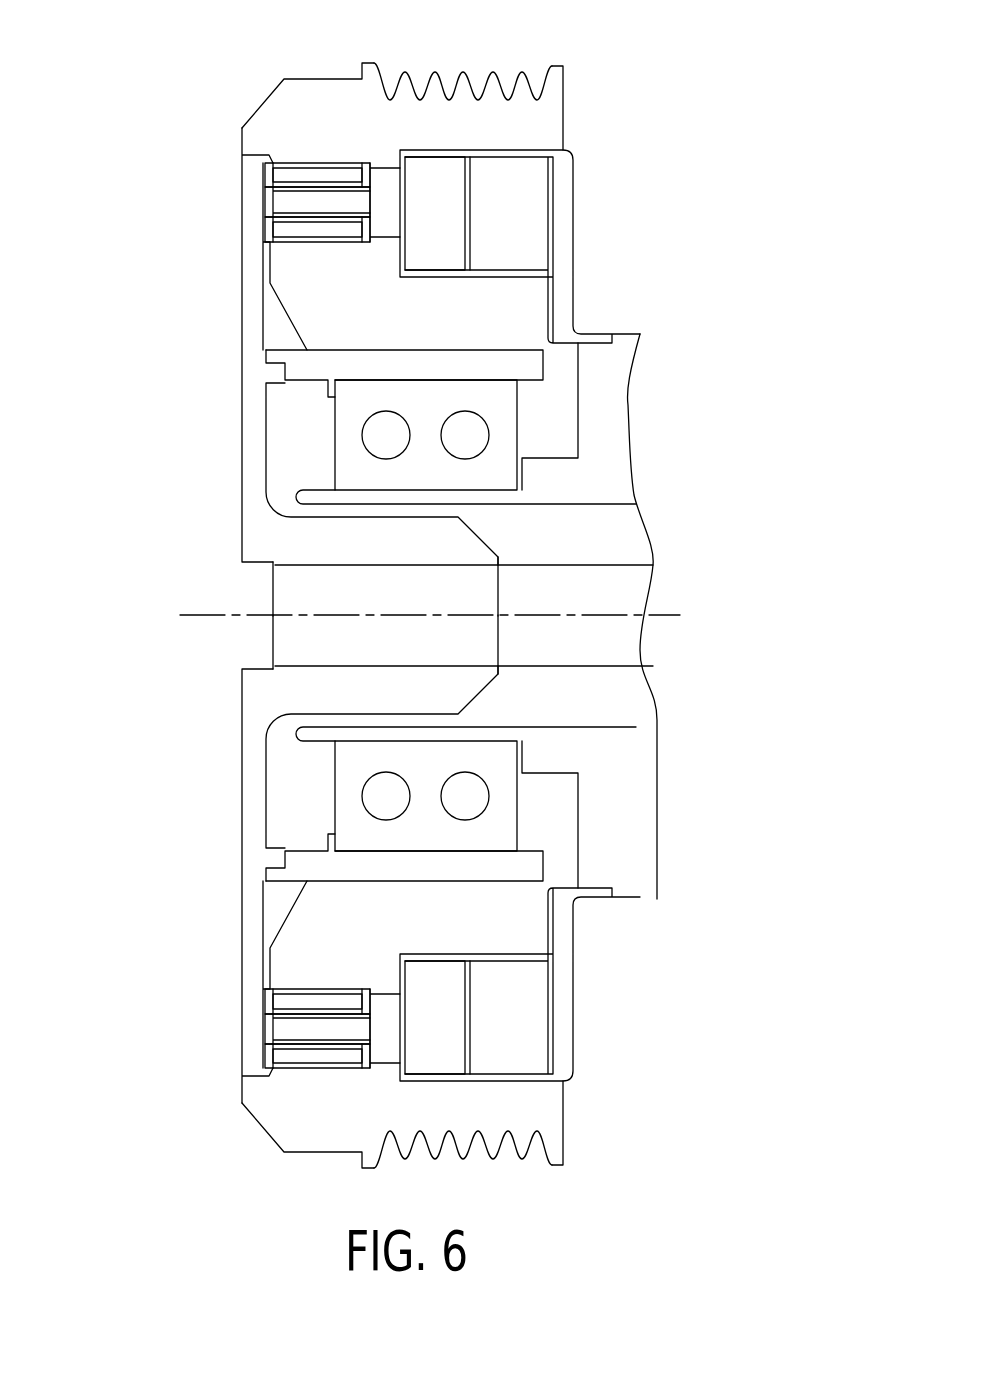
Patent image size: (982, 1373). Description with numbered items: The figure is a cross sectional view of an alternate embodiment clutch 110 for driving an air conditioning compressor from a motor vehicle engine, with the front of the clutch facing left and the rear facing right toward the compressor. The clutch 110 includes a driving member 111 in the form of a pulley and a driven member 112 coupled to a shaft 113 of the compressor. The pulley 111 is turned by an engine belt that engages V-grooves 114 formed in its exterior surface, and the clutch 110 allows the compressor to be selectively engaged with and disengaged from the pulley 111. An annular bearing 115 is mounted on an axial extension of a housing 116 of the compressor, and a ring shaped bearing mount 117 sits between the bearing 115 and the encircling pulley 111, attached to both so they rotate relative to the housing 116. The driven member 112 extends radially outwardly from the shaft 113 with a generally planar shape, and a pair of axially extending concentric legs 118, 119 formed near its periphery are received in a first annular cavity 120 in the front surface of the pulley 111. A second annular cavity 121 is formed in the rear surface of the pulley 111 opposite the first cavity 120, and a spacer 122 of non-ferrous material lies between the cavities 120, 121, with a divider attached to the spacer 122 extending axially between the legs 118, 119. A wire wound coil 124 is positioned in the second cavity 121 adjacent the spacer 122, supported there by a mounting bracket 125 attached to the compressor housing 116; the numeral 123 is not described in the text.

The clutch 110 is at (158, 454).
The driving member 111 is at (257, 96).
The driven member 112 is at (231, 285).
The shaft 113 is at (428, 600).
The V-grooves 114 is at (478, 100).
The annular bearing 115 is at (478, 433).
The housing 116 is at (562, 487).
The bearing mount 117 is at (535, 368).
The leg 118 is at (293, 175).
The leg 119 is at (292, 228).
The first annular cavity 120 is at (252, 576).
The second annular cavity 121 is at (529, 577).
The spacer 122 is at (382, 187).
The spacer 123 is at (285, 203).
The wire wound coil 124 is at (453, 220).
The mounting bracket 125 is at (550, 237).